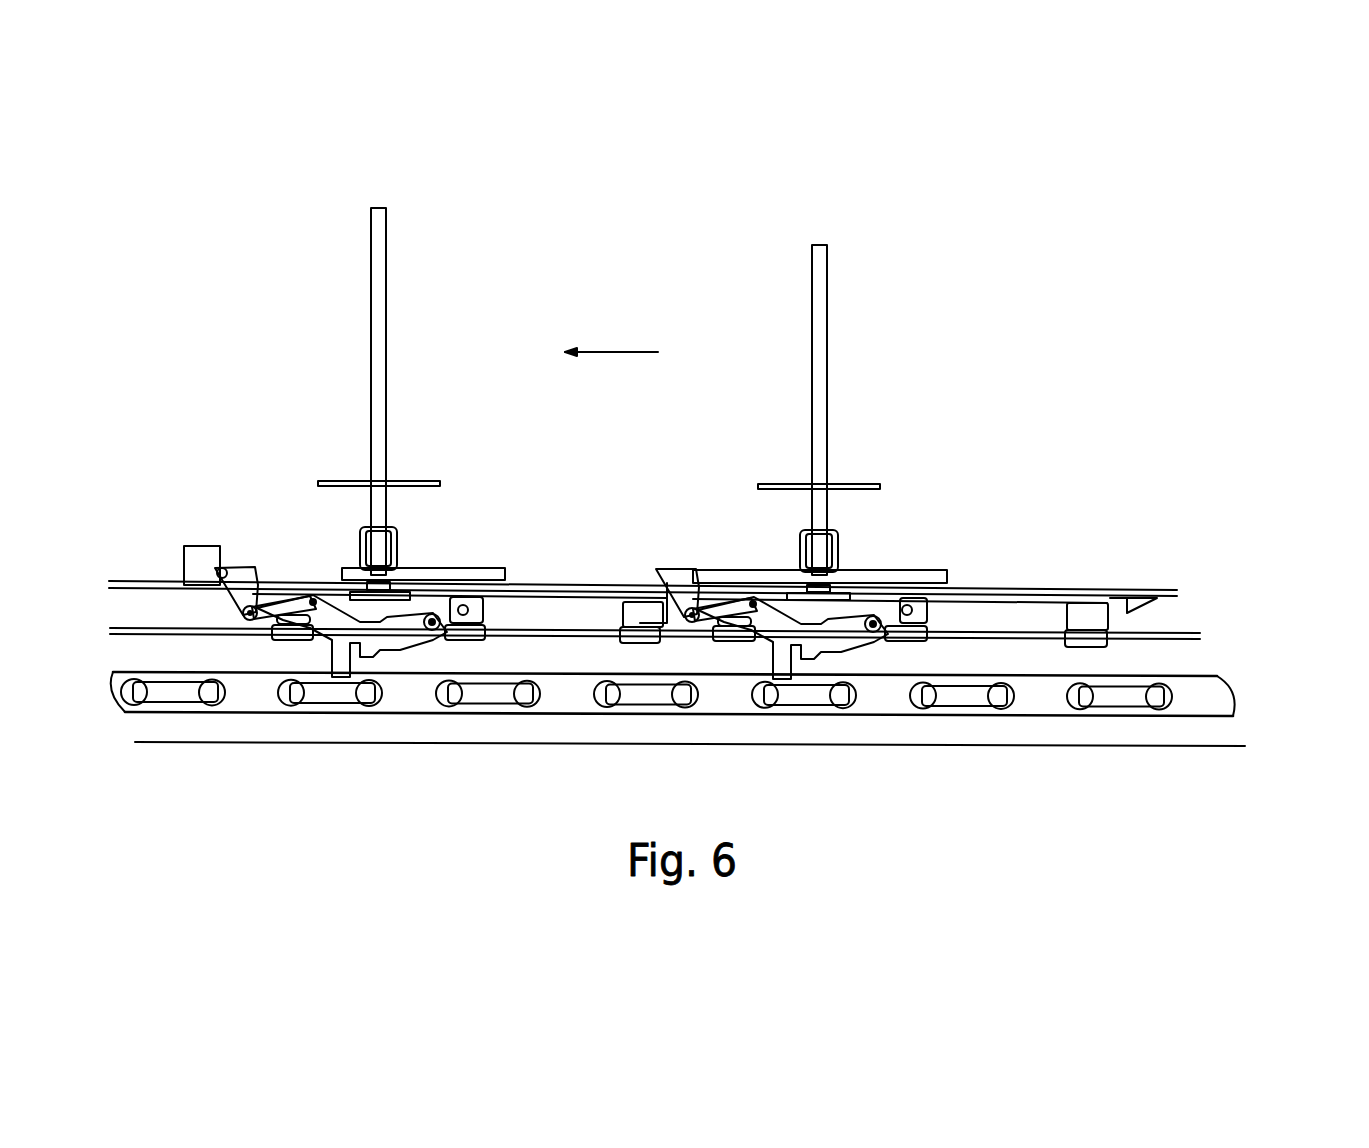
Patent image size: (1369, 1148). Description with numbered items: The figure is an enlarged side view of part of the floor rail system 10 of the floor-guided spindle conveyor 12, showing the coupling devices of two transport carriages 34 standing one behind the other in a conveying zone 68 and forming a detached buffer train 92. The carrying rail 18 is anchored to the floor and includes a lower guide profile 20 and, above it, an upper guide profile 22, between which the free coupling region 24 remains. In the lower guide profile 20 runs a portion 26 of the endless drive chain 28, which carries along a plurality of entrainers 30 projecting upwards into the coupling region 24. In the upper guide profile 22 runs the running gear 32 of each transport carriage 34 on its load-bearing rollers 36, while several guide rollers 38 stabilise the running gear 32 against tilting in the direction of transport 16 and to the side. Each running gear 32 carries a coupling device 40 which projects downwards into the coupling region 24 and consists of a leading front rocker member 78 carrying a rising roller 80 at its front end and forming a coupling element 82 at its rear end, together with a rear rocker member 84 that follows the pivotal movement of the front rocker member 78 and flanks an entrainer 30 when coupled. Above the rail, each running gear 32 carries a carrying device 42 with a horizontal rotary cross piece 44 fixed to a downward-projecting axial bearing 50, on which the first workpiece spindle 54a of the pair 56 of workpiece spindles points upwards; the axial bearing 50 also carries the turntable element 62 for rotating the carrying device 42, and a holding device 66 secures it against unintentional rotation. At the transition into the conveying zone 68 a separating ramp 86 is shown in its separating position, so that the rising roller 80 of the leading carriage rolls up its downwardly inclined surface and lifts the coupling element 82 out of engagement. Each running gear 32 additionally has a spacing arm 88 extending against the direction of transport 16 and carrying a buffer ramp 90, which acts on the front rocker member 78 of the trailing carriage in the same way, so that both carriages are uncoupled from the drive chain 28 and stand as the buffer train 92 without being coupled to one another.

The floor rail system 10 is at (158, 178).
The spindle conveyor 12 is at (264, 802).
The direction of transport 16 is at (618, 352).
The carrying rail 18 is at (1182, 602).
The lower guide profile 20 is at (1230, 710).
The upper guide profile 22 is at (1173, 617).
The coupling region 24 is at (1174, 658).
The portion of the endless drive chain 26 is at (570, 700).
The endless drive chain 28 is at (1030, 748).
The entrainer 30 is at (345, 678).
The running gear 32 is at (336, 572).
The transport carriage 34 is at (417, 390).
The load-bearing roller 36 is at (262, 600).
The guide roller 38 is at (290, 632).
The coupling device 40 is at (388, 672).
The carrying device 42 is at (417, 440).
The rotary cross piece 44 is at (400, 531).
The axial bearing 50 is at (425, 578).
The first workpiece spindle 54a is at (375, 243).
The pair of workpiece spindles 56 is at (412, 268).
The turntable element 62 is at (468, 608).
The holding device 66 is at (357, 578).
The conveying zone 68 is at (640, 190).
The front rocker member 78 is at (333, 612).
The rising roller 80 is at (250, 620).
The coupling element 82 is at (332, 645).
The rear rocker member 84 is at (410, 652).
The separating ramp 86 is at (240, 570).
The spacing arm 88 is at (472, 624).
The buffer ramp 90 is at (681, 596).
The buffer train 92 is at (742, 190).